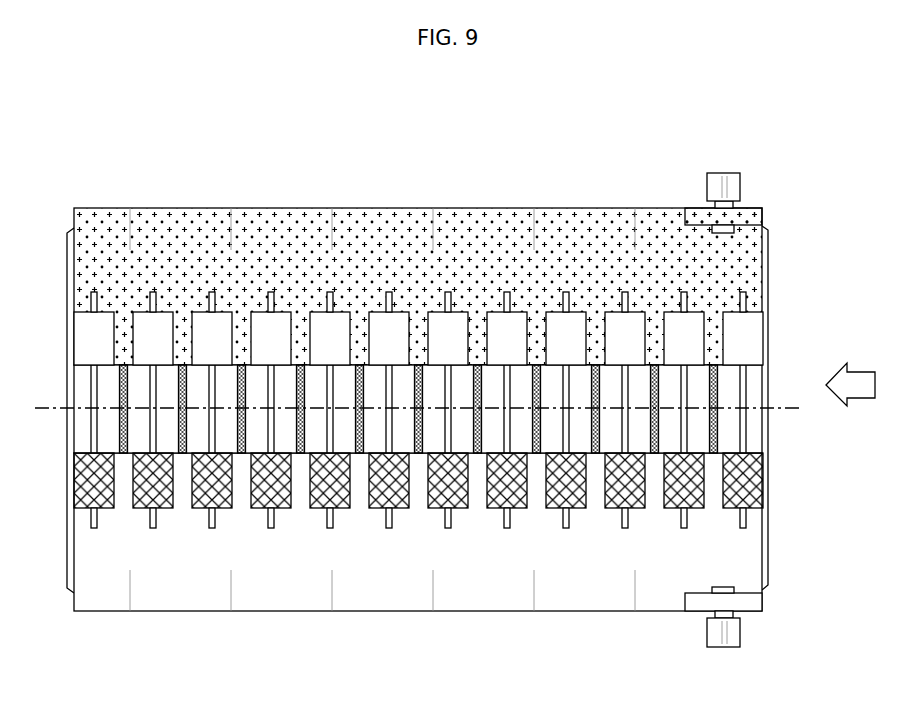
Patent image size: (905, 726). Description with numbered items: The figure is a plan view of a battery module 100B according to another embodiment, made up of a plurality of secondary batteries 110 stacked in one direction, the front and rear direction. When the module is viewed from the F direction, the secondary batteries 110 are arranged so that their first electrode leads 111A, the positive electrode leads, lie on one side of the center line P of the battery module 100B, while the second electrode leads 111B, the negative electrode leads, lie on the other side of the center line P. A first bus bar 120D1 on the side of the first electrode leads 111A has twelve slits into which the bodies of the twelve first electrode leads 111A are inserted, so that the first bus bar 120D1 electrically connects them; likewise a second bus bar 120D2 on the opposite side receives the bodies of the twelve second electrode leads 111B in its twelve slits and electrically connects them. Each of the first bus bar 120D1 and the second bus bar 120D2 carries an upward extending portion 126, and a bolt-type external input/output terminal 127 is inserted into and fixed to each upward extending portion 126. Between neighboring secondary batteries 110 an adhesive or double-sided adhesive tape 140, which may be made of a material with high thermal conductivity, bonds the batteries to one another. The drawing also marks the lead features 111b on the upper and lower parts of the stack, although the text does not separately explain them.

The battery module 100B is at (172, 110).
The secondary battery 110 is at (137, 422).
The first electrode lead 111A is at (763, 341).
The second electrode lead 111B is at (763, 462).
The electrode lead of battery cell 111b is at (755, 321).
The first bus bar 120D1 is at (560, 198).
The second bus bar 120D2 is at (502, 622).
The upward extending portion 126 is at (763, 216).
The external input/output terminal 127 is at (724, 173).
The adhesive or double-sided adhesive tape 140 is at (183, 383).
The center line P is at (426, 412).
The F direction F is at (850, 376).